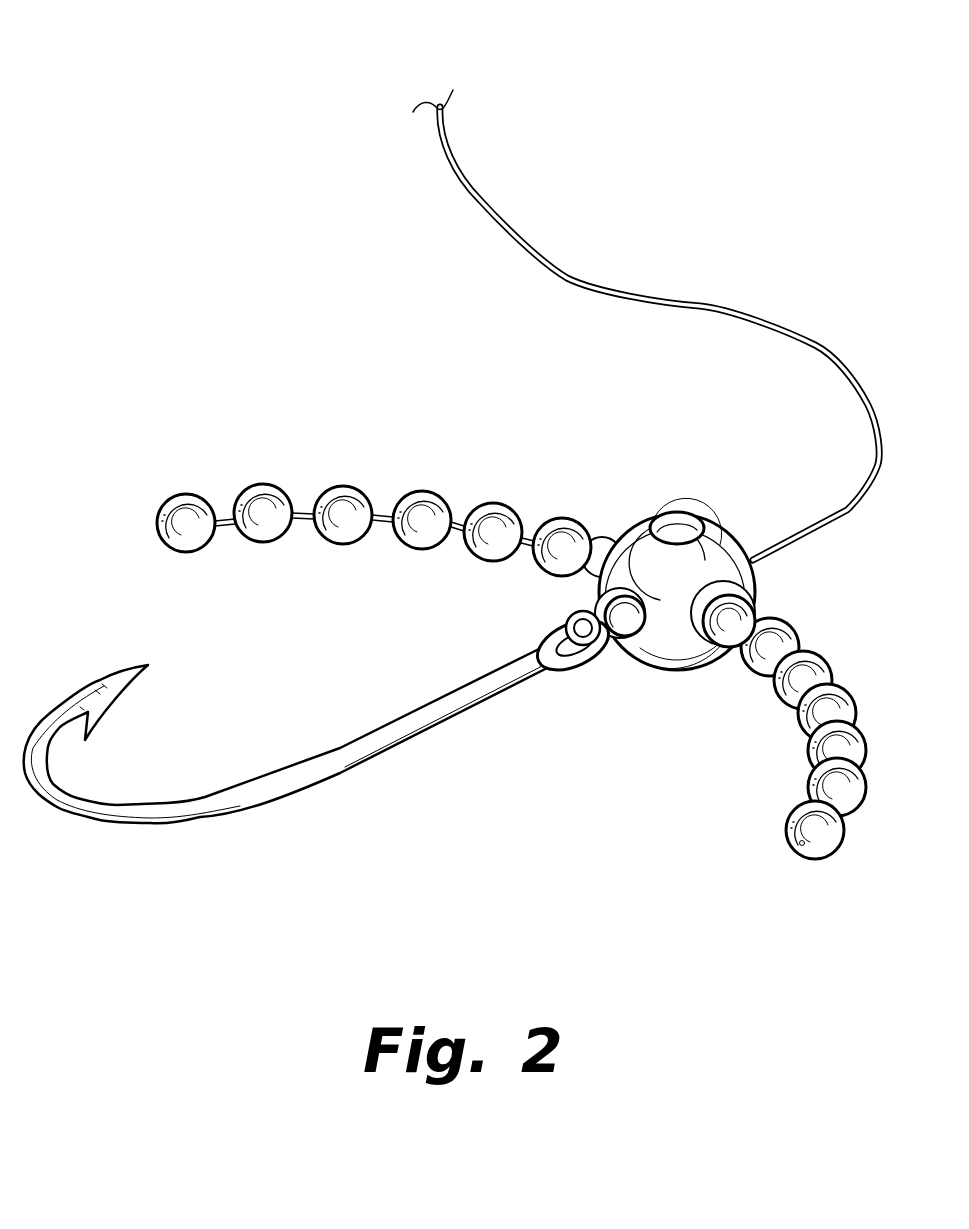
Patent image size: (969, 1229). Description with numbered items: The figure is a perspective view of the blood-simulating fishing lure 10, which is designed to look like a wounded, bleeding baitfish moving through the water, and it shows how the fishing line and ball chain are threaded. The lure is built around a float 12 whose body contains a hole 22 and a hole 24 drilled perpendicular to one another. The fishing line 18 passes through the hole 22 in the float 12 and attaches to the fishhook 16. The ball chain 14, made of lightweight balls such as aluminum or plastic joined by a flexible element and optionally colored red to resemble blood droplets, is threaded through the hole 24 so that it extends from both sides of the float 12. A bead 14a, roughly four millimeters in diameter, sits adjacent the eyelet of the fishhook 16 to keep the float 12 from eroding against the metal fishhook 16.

The blood-simulating fishing lure 10 is at (143, 102).
The float 12 is at (718, 528).
The ball chain 14 is at (178, 496).
The bead 14a is at (602, 603).
The fishhook 16 is at (271, 802).
The fishing line 18 is at (665, 300).
The hole 22 is at (621, 652).
The hole 24 is at (758, 598).